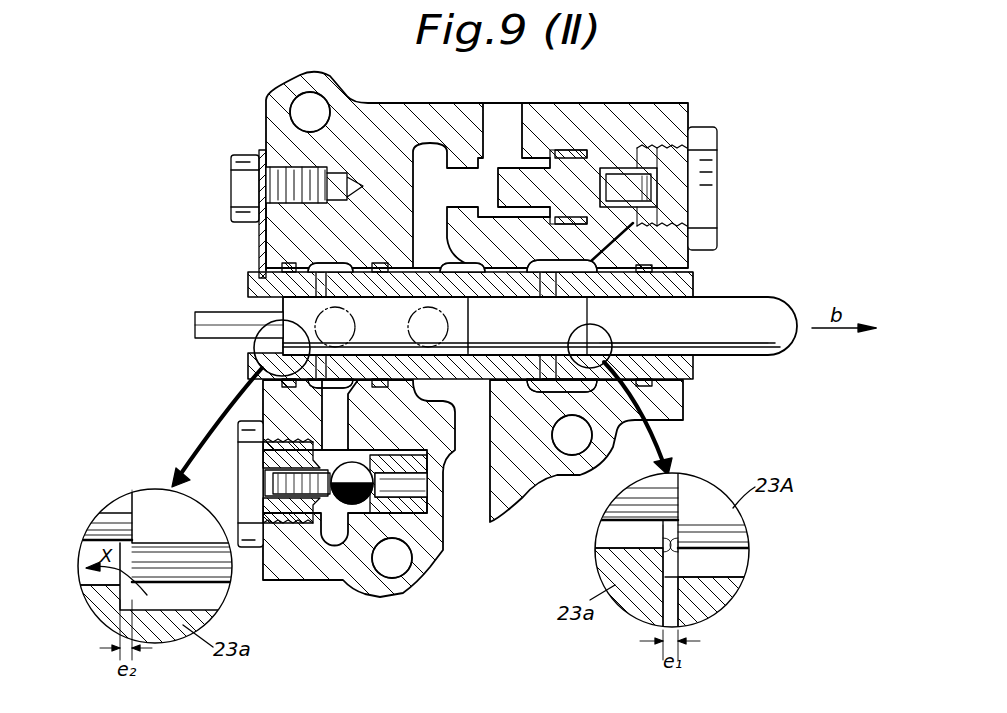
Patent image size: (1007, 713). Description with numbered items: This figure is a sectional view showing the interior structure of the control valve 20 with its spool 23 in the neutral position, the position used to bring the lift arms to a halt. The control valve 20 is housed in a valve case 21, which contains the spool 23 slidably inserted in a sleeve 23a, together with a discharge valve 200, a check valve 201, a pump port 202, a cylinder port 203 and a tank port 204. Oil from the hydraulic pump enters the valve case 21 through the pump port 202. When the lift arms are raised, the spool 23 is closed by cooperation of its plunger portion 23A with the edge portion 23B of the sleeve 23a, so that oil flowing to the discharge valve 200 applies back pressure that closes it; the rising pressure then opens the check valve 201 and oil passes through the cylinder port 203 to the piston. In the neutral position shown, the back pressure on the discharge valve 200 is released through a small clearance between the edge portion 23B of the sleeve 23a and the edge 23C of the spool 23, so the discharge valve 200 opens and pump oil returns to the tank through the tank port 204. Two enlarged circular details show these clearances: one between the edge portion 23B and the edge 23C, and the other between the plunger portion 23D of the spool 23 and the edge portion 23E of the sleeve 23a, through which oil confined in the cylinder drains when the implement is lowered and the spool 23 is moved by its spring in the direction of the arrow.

The control valve 20 is at (645, 86).
The discharge valve 200 is at (645, 165).
The tank port 204 is at (512, 112).
The cylinder port 203 is at (353, 330).
The pump port 202 is at (473, 330).
The spool 23 is at (510, 302).
The plunger portion 23A is at (745, 357).
The sleeve 23a is at (692, 283).
The valve case 21 is at (520, 492).
The check valve 201 is at (330, 503).
The plunger portion 23D is at (135, 513).
The edge portion 23E is at (120, 592).
The edge portion 23B is at (660, 542).
The edge 23C is at (683, 553).